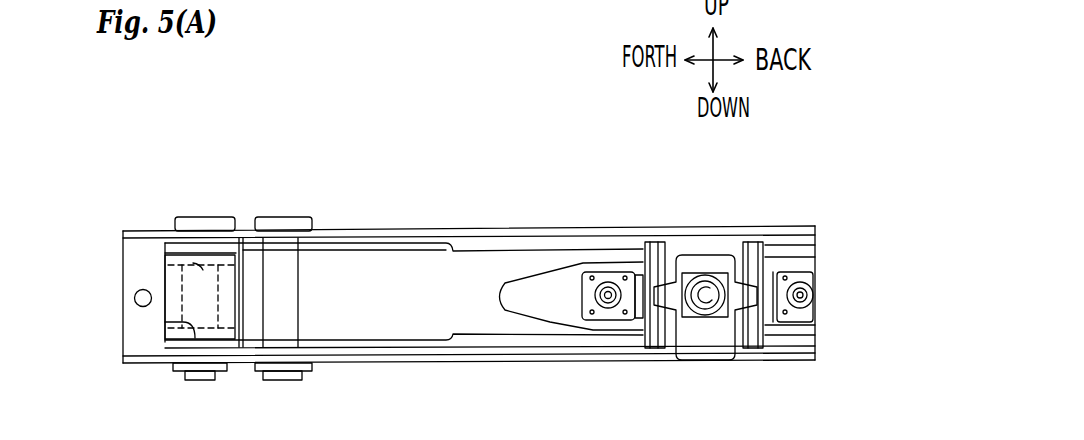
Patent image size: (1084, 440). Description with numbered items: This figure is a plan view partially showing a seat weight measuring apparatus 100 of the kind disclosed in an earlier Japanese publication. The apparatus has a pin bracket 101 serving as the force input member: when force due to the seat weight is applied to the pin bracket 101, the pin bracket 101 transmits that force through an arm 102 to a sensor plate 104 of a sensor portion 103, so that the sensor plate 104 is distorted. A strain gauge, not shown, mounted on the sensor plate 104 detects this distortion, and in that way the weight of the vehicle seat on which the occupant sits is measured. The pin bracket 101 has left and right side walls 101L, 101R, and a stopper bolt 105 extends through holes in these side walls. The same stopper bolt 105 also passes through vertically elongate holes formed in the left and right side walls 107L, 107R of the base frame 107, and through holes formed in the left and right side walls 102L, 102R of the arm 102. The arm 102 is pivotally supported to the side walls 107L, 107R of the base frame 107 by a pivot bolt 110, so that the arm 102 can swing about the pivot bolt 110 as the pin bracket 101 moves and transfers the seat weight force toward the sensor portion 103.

The seat weight measuring apparatus 100 is at (487, 138).
The pin bracket 101 is at (175, 277).
The right side wall of the pin bracket 101R is at (193, 263).
The left side wall of the pin bracket 101L is at (183, 324).
The arm 102 is at (425, 268).
The right side wall of the arm 102R is at (240, 228).
The left side wall of the arm 102L is at (332, 363).
The sensor portion 103 is at (711, 377).
The sensor plate 104 is at (690, 258).
The stopper bolt 105 is at (191, 383).
The base frame 107 is at (128, 254).
The right side wall of the base frame 107R is at (162, 227).
The left side wall of the base frame 107L is at (128, 366).
The pivot bolt 110 is at (290, 313).